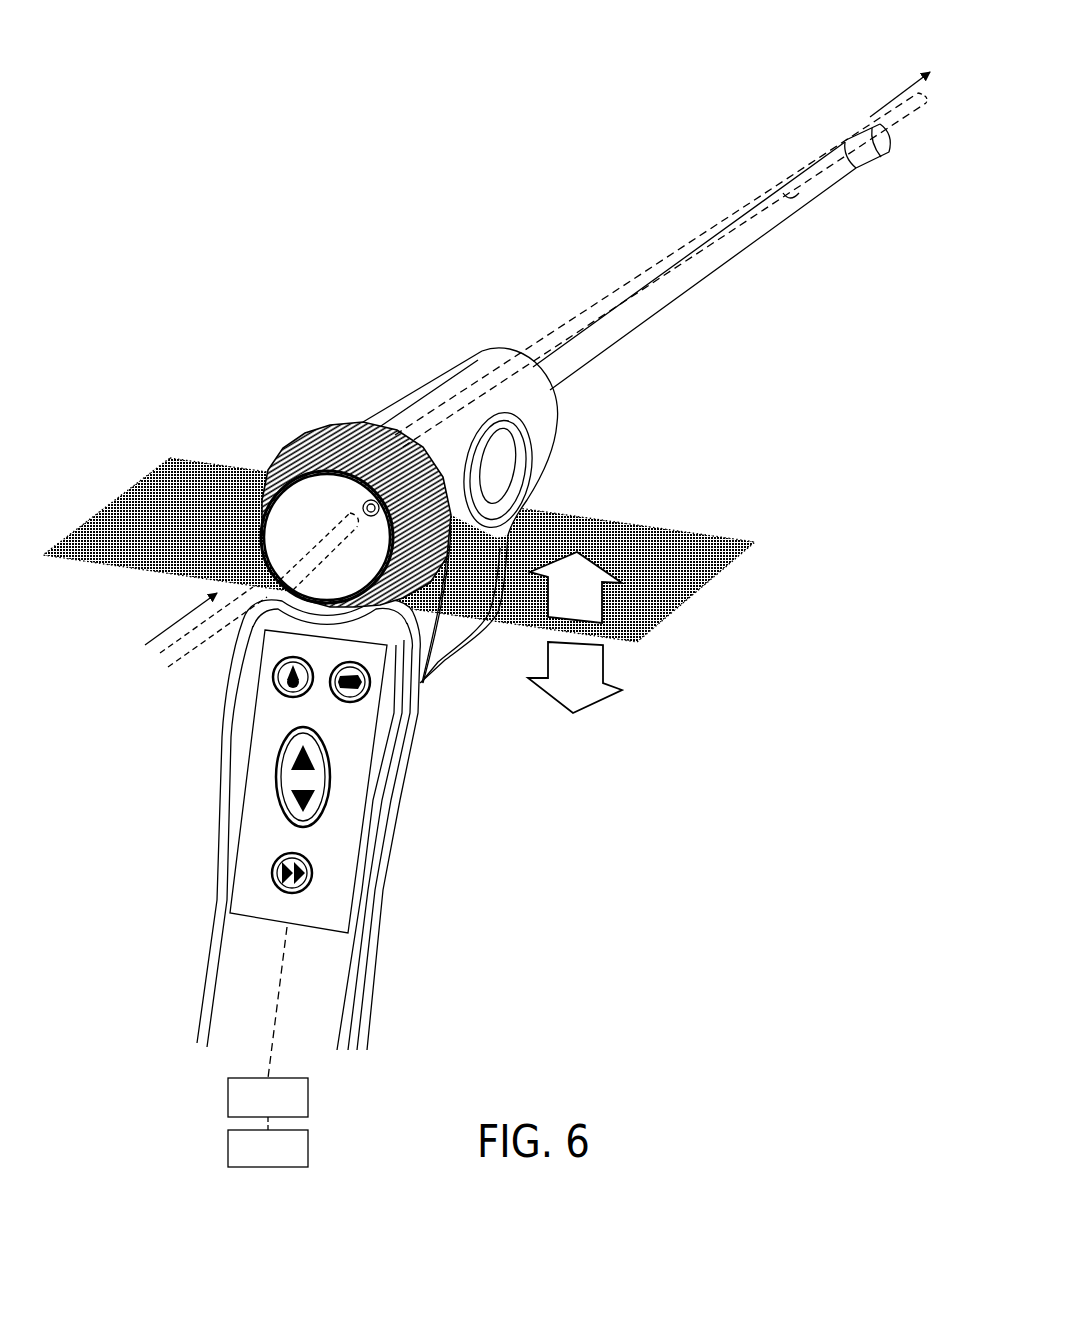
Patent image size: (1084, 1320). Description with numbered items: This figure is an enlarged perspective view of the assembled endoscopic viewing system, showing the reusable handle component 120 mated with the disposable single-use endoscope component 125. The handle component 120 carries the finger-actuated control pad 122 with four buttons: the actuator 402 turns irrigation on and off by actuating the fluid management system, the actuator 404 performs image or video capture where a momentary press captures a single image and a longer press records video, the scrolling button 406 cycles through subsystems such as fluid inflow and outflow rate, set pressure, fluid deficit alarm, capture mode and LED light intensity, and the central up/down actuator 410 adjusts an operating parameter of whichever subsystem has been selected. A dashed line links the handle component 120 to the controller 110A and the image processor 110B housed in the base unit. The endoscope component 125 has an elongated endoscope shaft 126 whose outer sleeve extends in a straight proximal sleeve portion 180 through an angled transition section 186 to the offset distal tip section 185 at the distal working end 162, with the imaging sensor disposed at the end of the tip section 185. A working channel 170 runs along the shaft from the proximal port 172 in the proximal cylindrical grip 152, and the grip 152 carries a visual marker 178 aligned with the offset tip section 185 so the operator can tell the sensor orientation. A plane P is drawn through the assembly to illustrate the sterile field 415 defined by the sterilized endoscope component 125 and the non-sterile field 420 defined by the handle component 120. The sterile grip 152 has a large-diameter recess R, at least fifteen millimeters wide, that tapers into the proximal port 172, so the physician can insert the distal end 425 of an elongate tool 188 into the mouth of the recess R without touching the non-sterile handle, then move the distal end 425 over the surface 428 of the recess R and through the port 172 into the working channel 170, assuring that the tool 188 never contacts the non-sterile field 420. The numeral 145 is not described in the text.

The controller 110A is at (268, 1022).
The image processor 110B is at (268, 1142).
The reusable handle component 120 is at (410, 730).
The finger-actuated control pad 122 is at (253, 777).
The disposable single-use endoscope component 125 is at (430, 373).
The elongated endoscope shaft 126 is at (735, 251).
The housing opening 145 is at (550, 452).
The proximal cylindrical grip 152 is at (412, 504).
The distal working end 162 is at (826, 134).
The working channel 170 is at (640, 312).
The proximal port 172 is at (362, 505).
The visual marker 178 is at (417, 497).
The straight proximal sleeve portion 180 is at (787, 217).
The offset distal tip section 185 is at (884, 151).
The transition section 186 is at (862, 158).
The elongate tool 188 is at (187, 653).
The actuator 402 is at (277, 690).
The actuator 404 is at (372, 688).
The scrolling button 406 is at (313, 866).
The up/down actuator 410 is at (331, 770).
The sterile field 415 is at (666, 587).
The non-sterile field 420 is at (696, 687).
The distal end of tool 425 is at (347, 535).
The surface of recess 428 is at (280, 543).
The plane P is at (677, 530).
The recess R is at (280, 507).